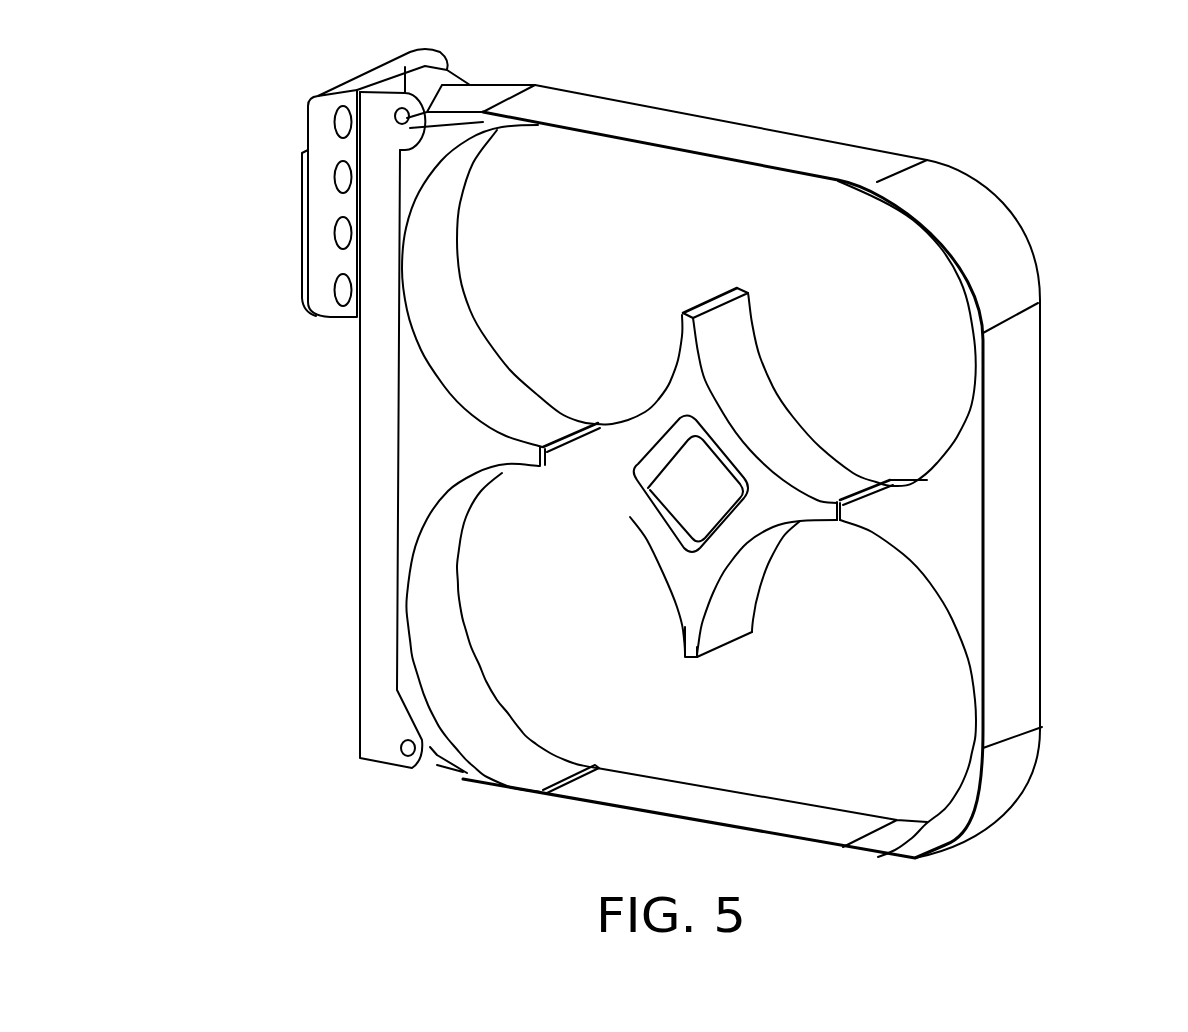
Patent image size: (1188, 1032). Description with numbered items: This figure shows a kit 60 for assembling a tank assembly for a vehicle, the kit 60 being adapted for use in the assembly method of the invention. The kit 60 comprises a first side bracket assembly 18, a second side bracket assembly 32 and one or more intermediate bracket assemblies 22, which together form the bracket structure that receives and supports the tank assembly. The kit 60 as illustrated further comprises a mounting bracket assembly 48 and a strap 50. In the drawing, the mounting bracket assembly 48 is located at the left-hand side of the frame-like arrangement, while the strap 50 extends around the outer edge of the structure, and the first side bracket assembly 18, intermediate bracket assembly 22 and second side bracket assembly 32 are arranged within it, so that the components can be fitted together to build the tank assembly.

The first side bracket assembly 18 is at (455, 452).
The intermediate bracket assembly 22 is at (653, 528).
The second side bracket assembly 32 is at (943, 523).
The mounting bracket assembly 48 is at (258, 148).
The strap 50 is at (750, 108).
The kit 60 is at (1063, 118).